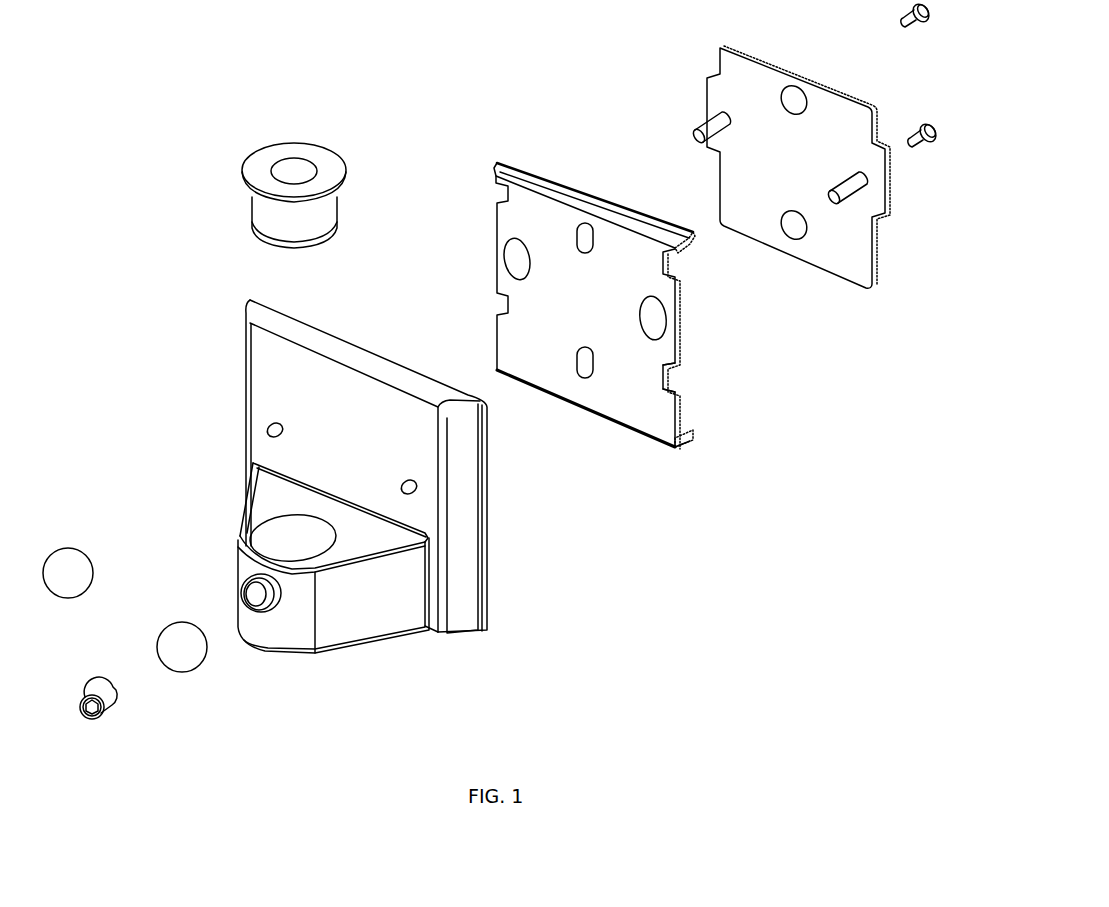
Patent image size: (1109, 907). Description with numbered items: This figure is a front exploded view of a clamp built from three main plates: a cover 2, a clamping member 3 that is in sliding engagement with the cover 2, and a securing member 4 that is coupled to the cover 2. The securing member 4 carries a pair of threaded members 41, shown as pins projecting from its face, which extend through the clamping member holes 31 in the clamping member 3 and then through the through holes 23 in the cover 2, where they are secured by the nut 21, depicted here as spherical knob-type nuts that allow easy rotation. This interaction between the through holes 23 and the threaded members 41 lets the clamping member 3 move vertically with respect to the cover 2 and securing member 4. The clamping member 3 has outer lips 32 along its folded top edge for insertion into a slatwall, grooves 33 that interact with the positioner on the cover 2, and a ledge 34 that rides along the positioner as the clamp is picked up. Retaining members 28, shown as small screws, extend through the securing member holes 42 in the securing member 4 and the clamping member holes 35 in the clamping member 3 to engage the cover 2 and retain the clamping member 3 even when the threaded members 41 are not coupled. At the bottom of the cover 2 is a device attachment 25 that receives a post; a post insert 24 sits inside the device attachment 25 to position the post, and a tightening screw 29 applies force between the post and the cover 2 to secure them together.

The cover 2 is at (322, 332).
The clamping member 3 is at (555, 174).
The securing member 4 is at (757, 58).
The nut 21 is at (80, 568).
The through hole 23 is at (414, 493).
The post insert 24 is at (340, 197).
The device attachment 25 is at (377, 613).
The retaining member 28 is at (922, 24).
The tightening screw 29 is at (108, 716).
The clamping member hole 31 is at (675, 340).
The outer lip 32 is at (693, 240).
The groove 33 is at (643, 317).
The ledge 34 is at (675, 367).
The clamping member hole 35 is at (587, 225).
The threaded member 41 is at (847, 193).
The securing member hole 42 is at (803, 88).